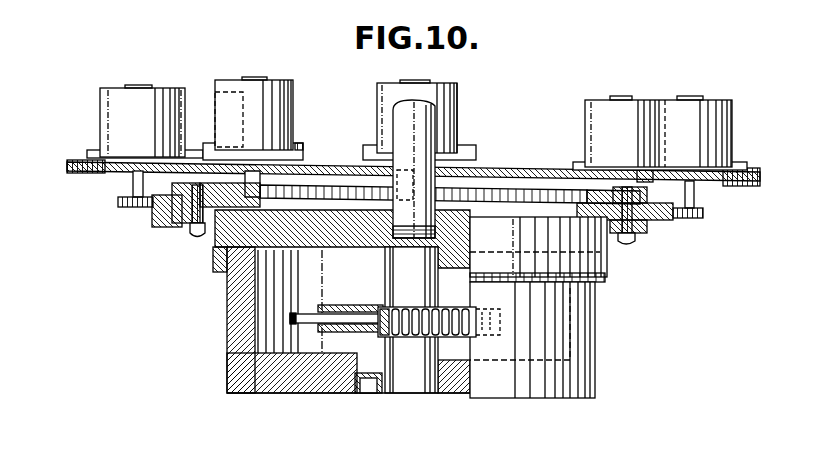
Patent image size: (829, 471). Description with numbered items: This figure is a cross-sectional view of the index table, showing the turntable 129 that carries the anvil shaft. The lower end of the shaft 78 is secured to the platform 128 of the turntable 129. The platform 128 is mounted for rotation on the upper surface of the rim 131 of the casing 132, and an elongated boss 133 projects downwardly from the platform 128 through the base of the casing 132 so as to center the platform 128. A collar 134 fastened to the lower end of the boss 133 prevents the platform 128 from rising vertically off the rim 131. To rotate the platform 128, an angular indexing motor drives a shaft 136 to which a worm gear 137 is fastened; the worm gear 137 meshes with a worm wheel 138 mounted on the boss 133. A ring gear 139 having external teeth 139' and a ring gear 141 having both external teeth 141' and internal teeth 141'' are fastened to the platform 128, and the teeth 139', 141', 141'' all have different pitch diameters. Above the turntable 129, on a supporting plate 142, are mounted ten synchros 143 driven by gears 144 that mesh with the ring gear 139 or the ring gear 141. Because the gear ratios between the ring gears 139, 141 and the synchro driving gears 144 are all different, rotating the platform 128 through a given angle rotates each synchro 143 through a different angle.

The shaft 78 is at (402, 122).
The platform 128 is at (215, 250).
The turntable 129 is at (609, 327).
The rim 131 is at (592, 295).
The casing 132 is at (590, 388).
The elongated boss 133 is at (392, 288).
The collar 134 is at (375, 388).
The shaft 136 is at (290, 320).
The worm gear 137 is at (408, 331).
The worm wheel 138 is at (340, 331).
The ring gear 139 is at (631, 222).
The external teeth 139' is at (169, 213).
The ring gear 141 is at (613, 168).
The external teeth 141' is at (186, 177).
The internal teeth 141'' is at (416, 167).
The supporting plate 142 is at (67, 165).
The synchros 143 is at (185, 90).
The synchro driving gears 144 is at (118, 201).